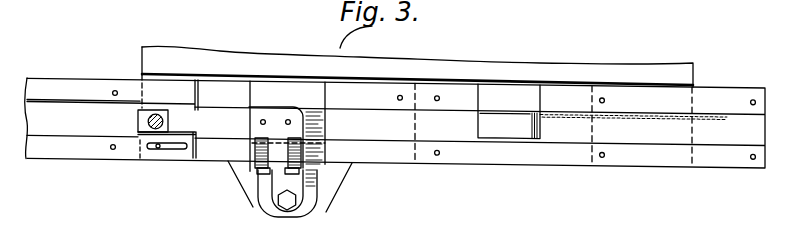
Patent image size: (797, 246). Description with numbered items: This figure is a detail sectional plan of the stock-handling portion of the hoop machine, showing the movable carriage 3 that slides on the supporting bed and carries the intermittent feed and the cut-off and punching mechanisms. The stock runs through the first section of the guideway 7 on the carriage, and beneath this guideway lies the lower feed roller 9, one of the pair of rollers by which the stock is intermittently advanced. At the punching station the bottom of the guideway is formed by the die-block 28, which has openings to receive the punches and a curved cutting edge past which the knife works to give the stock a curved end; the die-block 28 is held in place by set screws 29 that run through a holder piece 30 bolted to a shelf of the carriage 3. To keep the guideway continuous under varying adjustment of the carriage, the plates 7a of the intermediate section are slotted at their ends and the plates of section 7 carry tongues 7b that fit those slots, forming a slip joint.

The carriage 3 is at (693, 62).
The guideway 7 is at (723, 87).
The plates of intermediate guideway section 7a is at (70, 72).
The tongues 7b is at (180, 127).
The lower feed roller 9 is at (513, 139).
The die-block 28 is at (257, 128).
The set screws 29 is at (291, 172).
The holder piece 30 is at (295, 192).